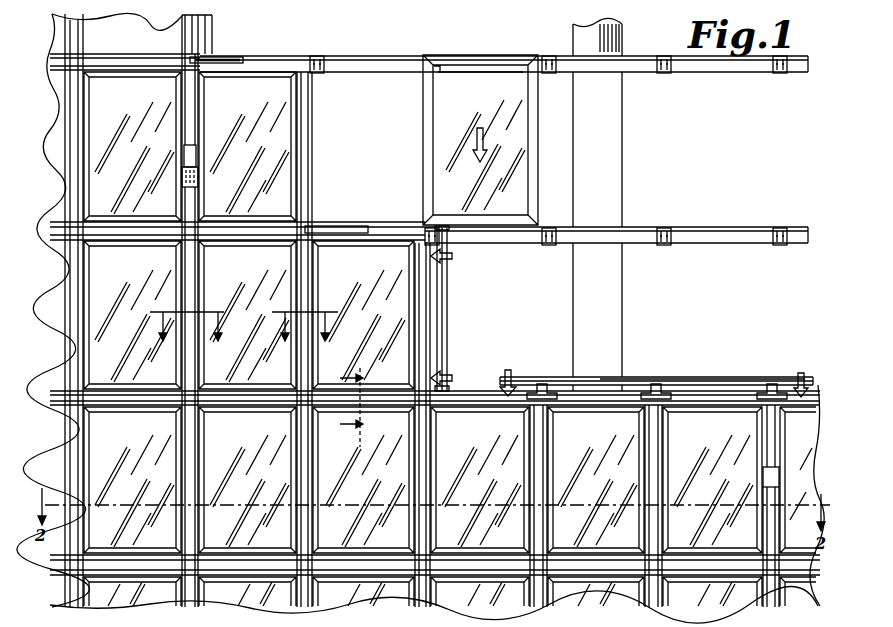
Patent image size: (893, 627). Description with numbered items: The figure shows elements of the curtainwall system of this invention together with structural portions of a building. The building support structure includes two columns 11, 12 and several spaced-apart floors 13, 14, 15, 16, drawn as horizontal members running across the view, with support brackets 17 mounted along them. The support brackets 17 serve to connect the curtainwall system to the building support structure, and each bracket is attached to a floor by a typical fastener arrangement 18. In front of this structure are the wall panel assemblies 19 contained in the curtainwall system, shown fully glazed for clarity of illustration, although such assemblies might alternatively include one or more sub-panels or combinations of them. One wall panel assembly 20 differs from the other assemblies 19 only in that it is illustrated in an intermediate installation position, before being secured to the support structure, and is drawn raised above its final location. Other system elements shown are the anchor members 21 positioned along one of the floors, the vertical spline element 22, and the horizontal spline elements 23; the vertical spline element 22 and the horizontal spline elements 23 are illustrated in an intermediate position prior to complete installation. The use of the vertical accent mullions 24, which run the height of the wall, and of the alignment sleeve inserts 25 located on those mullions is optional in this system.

The column 11 is at (213, 30).
The column 12 is at (618, 44).
The floor 13 is at (710, 76).
The floor 14 is at (742, 228).
The floor 15 is at (816, 384).
The floor 16 is at (816, 597).
The support bracket 17 is at (320, 74).
The fastener arrangement 18 is at (315, 58).
The wall panel assembly 19 is at (124, 120).
The wall panel assembly 20 is at (420, 153).
The anchor member 21 is at (543, 388).
The vertical spline element 22 is at (448, 316).
The horizontal spline element 23 is at (232, 58).
The vertical accent mullion 24 is at (196, 204).
The alignment sleeve insert 25 is at (196, 160).